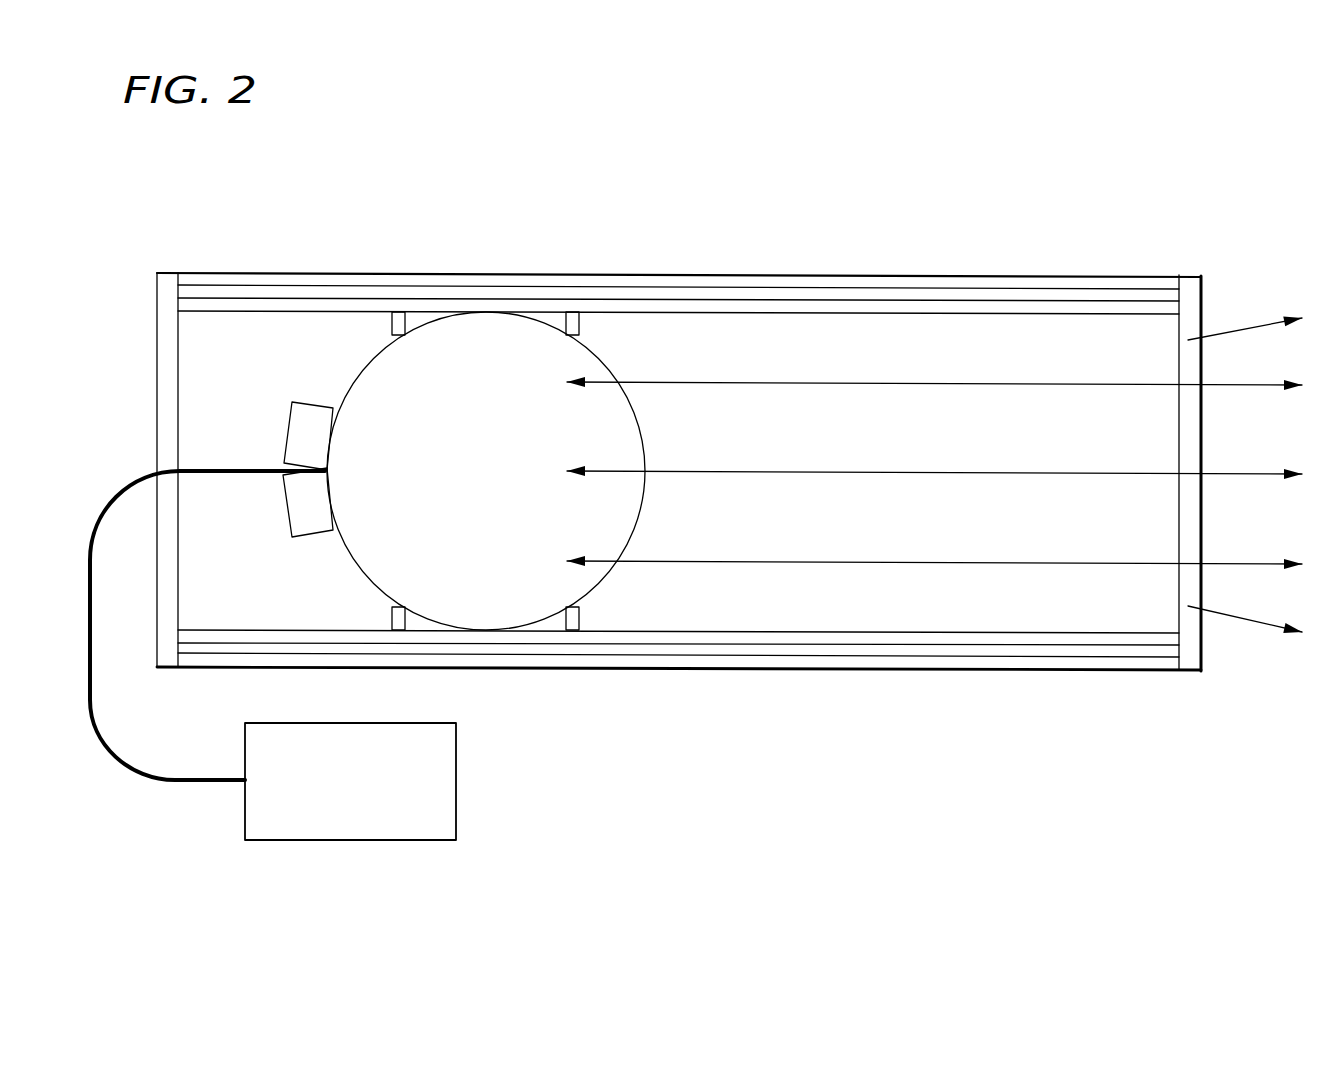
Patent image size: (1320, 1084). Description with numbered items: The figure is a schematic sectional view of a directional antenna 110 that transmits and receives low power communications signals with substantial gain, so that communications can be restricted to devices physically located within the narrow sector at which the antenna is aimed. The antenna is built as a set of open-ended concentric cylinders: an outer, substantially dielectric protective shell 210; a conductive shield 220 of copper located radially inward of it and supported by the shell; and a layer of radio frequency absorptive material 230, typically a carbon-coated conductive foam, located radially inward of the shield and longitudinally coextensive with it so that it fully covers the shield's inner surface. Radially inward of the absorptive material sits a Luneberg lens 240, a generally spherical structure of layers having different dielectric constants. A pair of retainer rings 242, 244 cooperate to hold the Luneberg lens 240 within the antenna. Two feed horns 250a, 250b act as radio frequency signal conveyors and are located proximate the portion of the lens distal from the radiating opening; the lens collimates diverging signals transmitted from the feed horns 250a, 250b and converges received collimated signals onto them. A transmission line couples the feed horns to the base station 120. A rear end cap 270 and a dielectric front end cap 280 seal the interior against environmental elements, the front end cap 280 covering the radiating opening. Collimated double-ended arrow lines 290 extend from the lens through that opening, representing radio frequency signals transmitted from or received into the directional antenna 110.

The directional antenna 110 is at (576, 218).
The base station 120 is at (362, 815).
The protective shell 210 is at (872, 284).
The conductive shield 220 is at (940, 296).
The radio frequency absorptive material 230 is at (1018, 308).
The Luneberg lens 240 is at (492, 489).
The retainer ring 242 is at (391, 323).
The retainer ring 244 is at (580, 323).
The feed horn 250a is at (298, 427).
The feed horn 250b is at (295, 512).
The rear end cap 270 is at (167, 288).
The dielectric front end cap 280 is at (1190, 288).
The emitted light 290 is at (1250, 563).